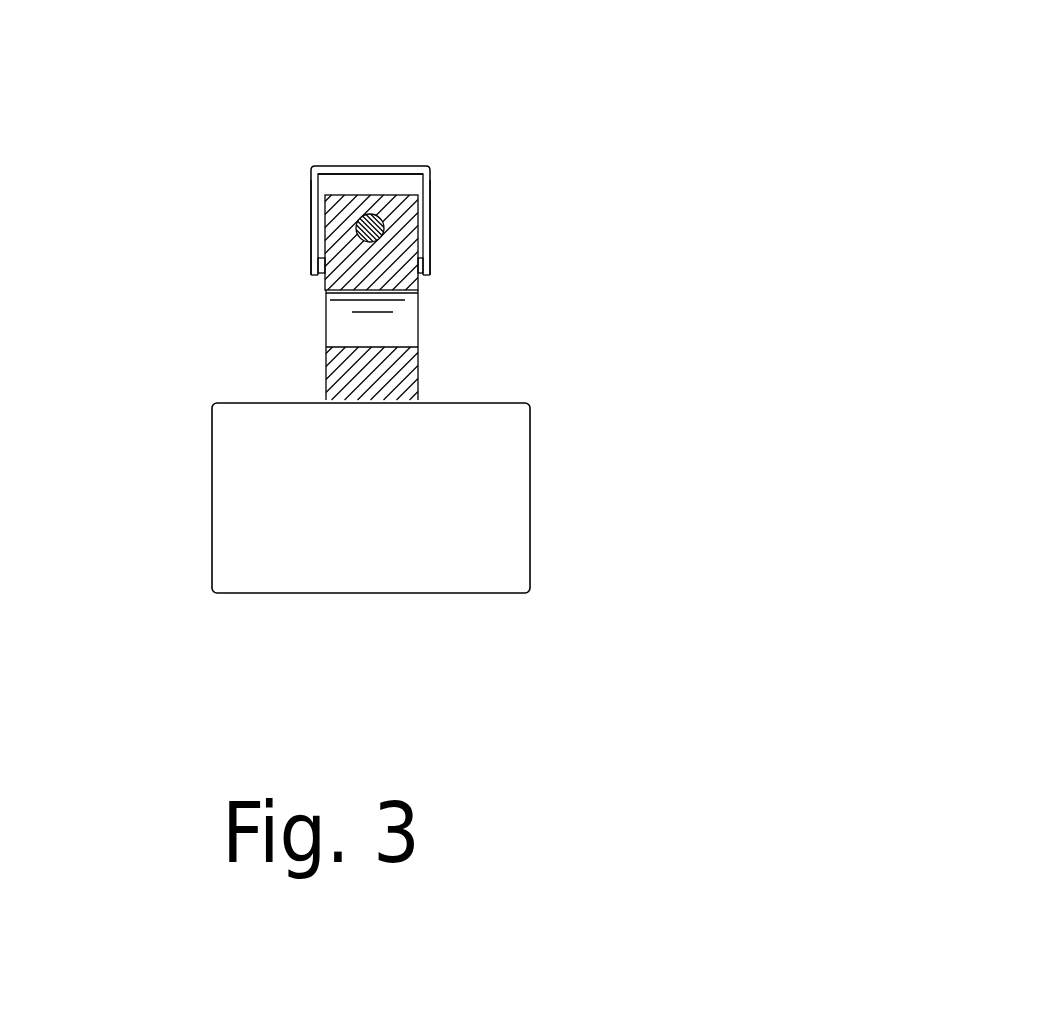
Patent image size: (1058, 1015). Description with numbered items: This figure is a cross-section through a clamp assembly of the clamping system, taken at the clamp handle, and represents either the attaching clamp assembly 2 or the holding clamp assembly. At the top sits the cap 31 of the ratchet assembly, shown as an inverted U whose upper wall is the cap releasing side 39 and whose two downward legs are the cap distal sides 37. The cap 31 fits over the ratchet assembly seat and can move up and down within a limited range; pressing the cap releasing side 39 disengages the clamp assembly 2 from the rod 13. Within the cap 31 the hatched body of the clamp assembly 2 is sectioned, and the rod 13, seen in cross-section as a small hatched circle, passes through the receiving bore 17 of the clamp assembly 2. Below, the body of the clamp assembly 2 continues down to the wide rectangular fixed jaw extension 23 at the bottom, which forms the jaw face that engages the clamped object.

The attaching clamp assembly 2 is at (327, 333).
The rod 13 is at (385, 222).
The receiving bore 17 is at (380, 235).
The fixed jaw extension 23 is at (495, 492).
The cap 31 is at (327, 165).
The cap distal side 37 is at (311, 227).
The cap releasing side 39 is at (375, 165).